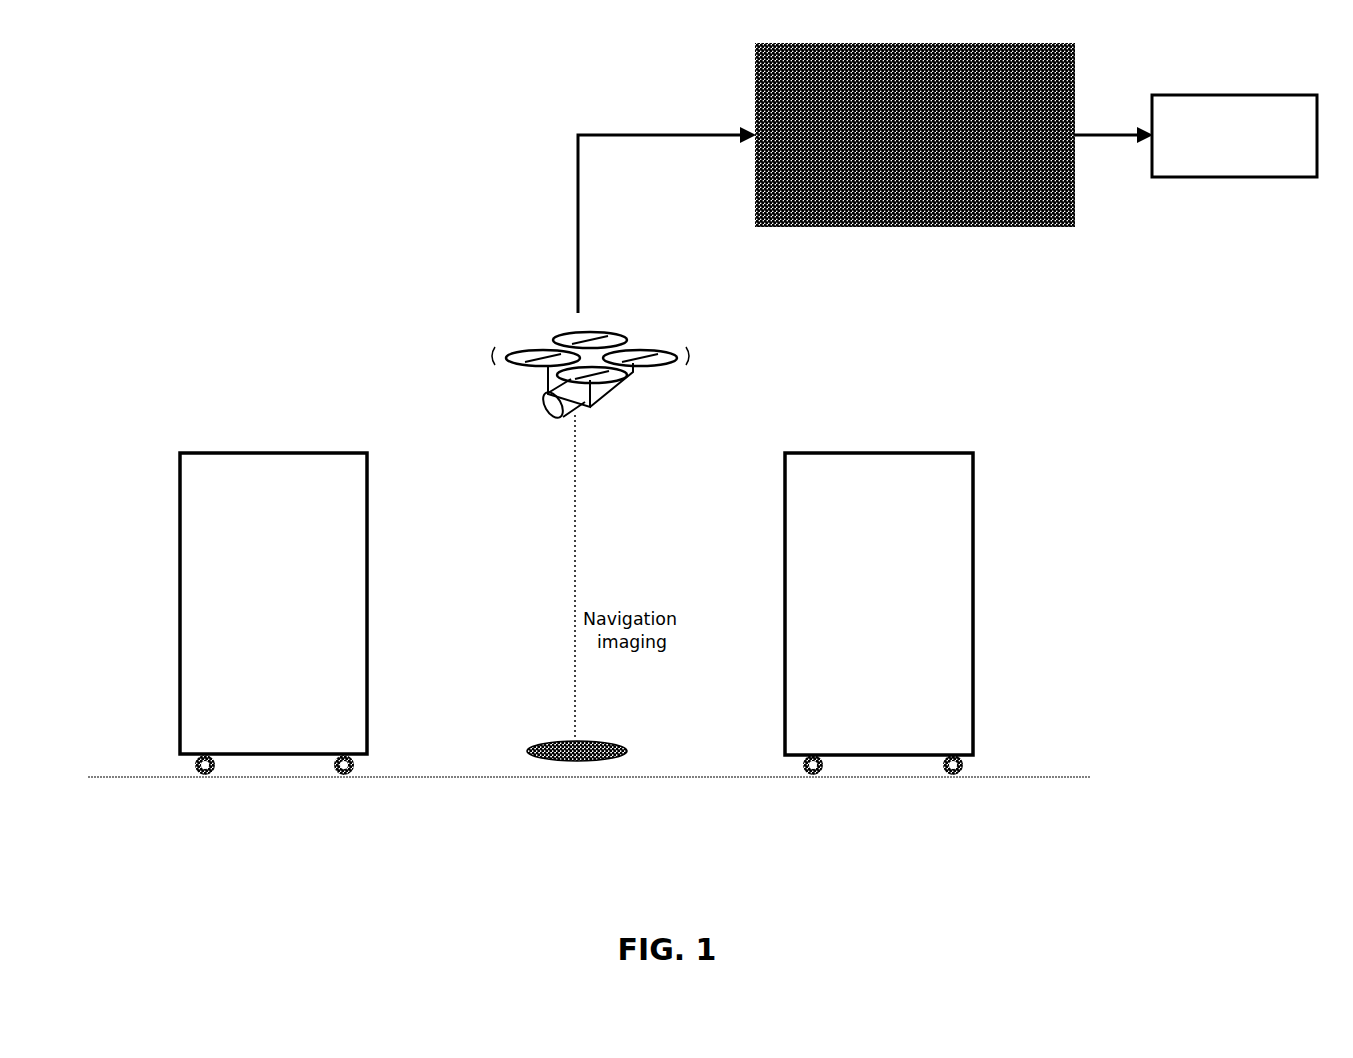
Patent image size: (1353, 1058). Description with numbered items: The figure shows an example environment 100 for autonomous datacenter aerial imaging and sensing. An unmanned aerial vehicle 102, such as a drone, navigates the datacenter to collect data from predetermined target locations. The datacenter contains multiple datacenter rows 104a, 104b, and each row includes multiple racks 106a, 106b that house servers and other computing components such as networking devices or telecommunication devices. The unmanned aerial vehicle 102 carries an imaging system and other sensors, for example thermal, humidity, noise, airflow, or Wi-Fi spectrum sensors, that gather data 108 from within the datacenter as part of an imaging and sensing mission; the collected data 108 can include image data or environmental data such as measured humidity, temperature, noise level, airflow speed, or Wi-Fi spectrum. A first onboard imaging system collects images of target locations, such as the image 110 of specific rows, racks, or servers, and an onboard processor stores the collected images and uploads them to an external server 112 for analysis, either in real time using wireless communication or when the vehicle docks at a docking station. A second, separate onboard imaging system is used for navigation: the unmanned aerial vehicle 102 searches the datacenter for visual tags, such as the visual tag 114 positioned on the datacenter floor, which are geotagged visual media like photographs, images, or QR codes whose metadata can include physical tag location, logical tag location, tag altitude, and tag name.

The environment 100 is at (157, 127).
The unmanned aerial vehicle 102 is at (567, 333).
The datacenter row 104a is at (339, 802).
The datacenter row 104b is at (840, 802).
The rack 106a is at (273, 614).
The rack 106b is at (879, 614).
The data 108 is at (538, 393).
The image 110 is at (915, 153).
The server 112 is at (1234, 136).
The visual tag 114 is at (542, 760).